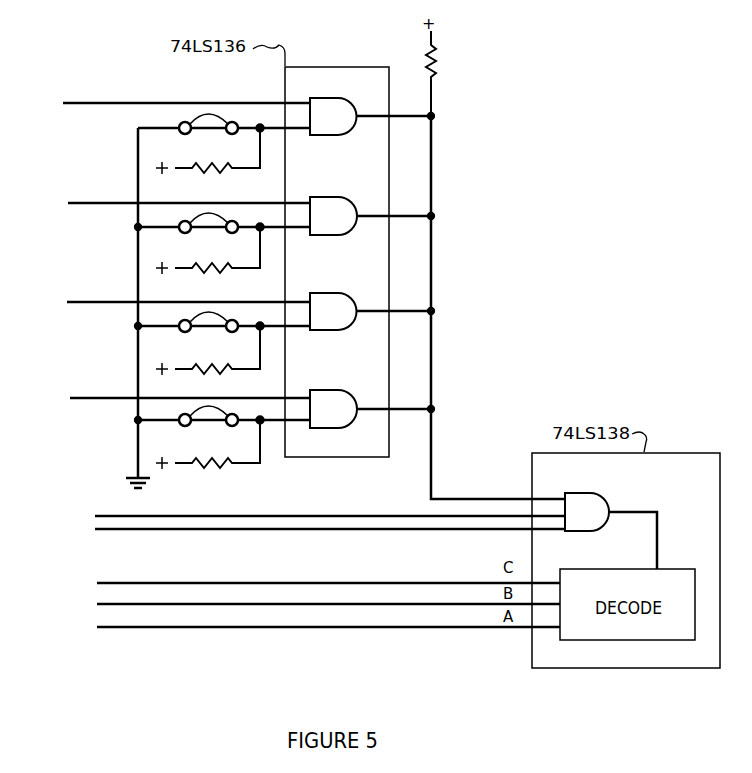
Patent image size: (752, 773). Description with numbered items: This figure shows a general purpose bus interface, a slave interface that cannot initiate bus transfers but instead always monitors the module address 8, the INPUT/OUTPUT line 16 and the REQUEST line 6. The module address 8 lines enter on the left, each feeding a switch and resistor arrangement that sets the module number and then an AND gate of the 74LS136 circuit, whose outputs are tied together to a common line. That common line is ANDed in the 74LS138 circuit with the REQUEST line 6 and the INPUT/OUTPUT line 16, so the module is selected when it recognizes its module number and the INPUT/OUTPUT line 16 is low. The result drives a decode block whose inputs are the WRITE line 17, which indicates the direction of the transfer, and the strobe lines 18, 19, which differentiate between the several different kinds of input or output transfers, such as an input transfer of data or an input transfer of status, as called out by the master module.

The module address 8 is at (63, 103).
The REQUEST line 6 is at (95, 516).
The INPUT/OUTPUT line 16 is at (96, 529).
The WRITE line 17 is at (97, 583).
The strobe line 18 is at (97, 604).
The strobe line 19 is at (97, 627).